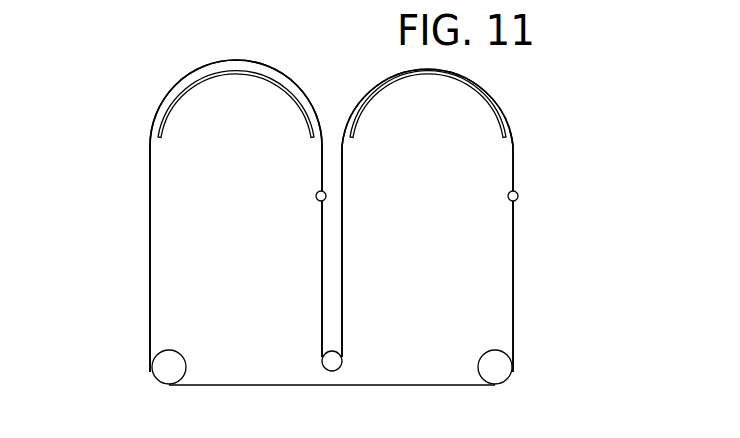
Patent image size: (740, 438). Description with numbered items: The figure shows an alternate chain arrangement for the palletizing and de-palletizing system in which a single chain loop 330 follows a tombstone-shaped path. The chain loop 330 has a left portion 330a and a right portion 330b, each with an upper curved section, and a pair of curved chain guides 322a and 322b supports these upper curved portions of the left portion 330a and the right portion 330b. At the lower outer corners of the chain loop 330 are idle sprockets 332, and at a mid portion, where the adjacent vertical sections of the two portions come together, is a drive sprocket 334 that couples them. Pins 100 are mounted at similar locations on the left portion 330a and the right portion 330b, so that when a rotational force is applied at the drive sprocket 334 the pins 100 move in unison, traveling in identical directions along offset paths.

The chain loop 330 is at (545, 140).
The left portion 330a is at (175, 275).
The right portion 330b is at (490, 277).
The curved chain guide 322a is at (225, 73).
The curved chain guide 322b is at (416, 73).
The pins 100 is at (316, 197).
The idle sprockets 332 is at (148, 375).
The drive sprocket 334 is at (340, 369).